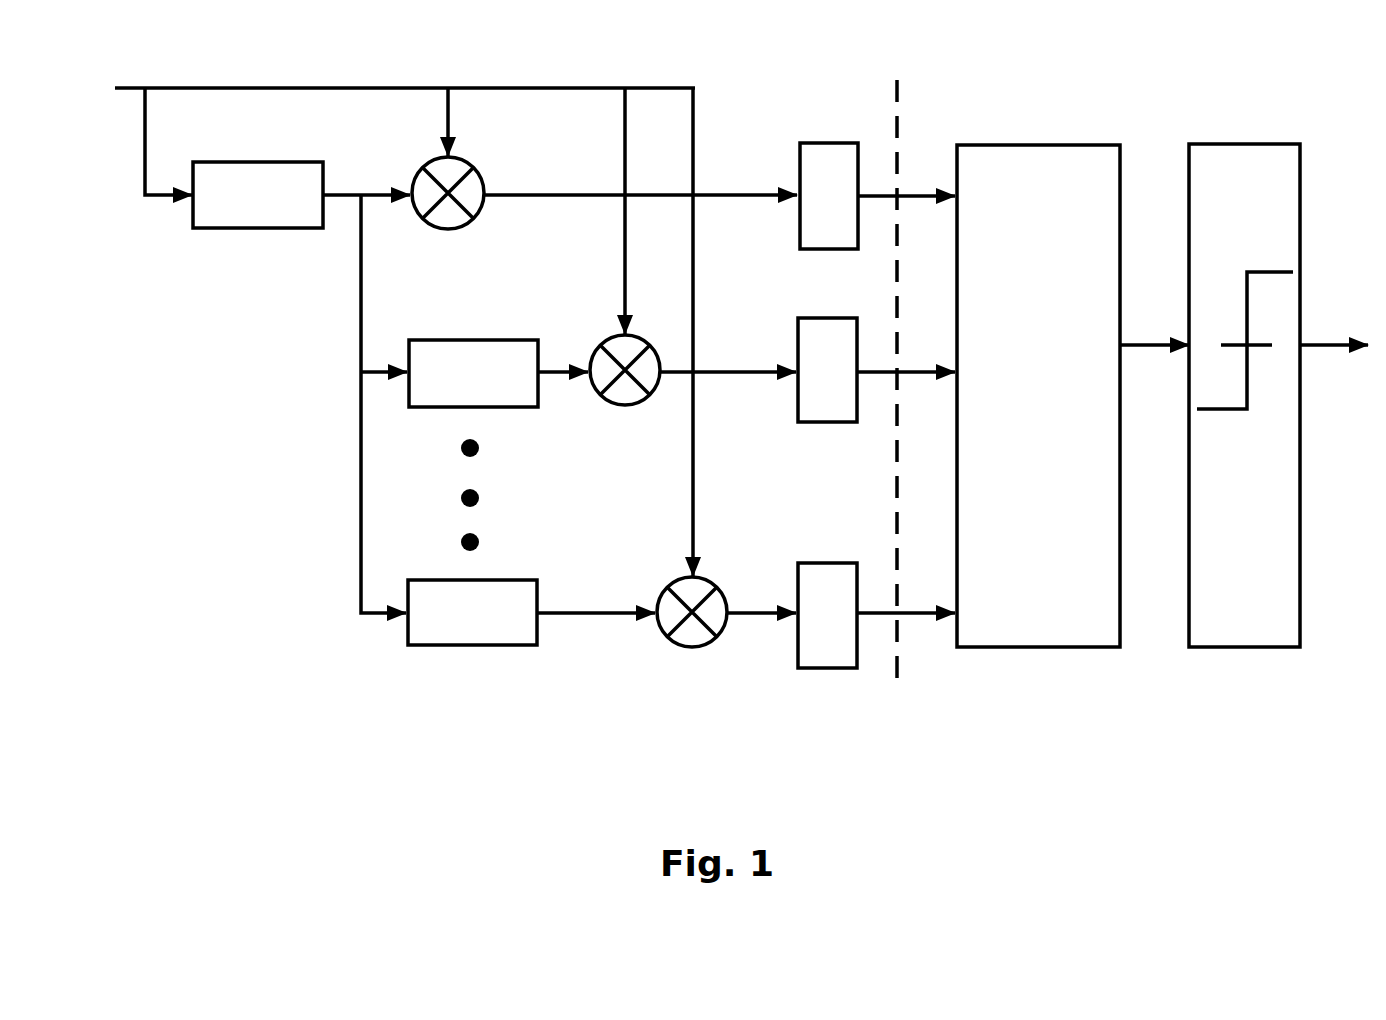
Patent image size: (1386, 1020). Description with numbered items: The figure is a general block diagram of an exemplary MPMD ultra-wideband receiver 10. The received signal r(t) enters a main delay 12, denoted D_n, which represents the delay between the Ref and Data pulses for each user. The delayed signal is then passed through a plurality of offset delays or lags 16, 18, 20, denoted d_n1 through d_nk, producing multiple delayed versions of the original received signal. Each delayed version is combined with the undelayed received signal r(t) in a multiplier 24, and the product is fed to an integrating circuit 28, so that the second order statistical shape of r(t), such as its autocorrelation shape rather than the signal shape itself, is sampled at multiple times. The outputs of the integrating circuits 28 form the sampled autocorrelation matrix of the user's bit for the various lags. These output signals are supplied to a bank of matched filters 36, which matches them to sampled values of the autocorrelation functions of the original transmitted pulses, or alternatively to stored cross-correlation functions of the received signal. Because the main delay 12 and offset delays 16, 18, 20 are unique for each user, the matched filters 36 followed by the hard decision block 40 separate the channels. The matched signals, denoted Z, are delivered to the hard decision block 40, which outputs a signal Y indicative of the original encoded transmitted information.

The MPMD receiver 10 is at (312, 46).
The main delay 12 is at (257, 228).
The offset delay 16 is at (487, 340).
The offset delay 18 is at (462, 450).
The offset delay 20 is at (438, 646).
The multiplier 24 is at (468, 168).
The integrating circuit 28 is at (812, 143).
The bank of matched filters 36 is at (1038, 143).
The hard decision block 40 is at (1222, 143).